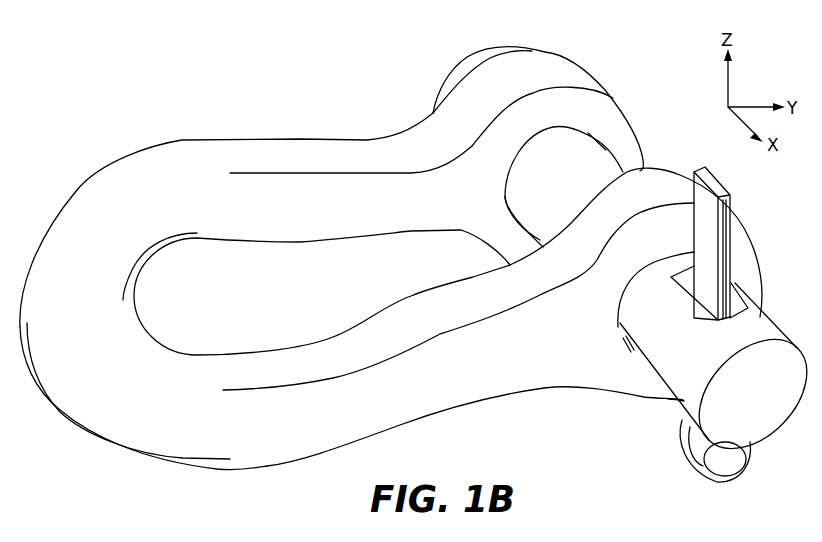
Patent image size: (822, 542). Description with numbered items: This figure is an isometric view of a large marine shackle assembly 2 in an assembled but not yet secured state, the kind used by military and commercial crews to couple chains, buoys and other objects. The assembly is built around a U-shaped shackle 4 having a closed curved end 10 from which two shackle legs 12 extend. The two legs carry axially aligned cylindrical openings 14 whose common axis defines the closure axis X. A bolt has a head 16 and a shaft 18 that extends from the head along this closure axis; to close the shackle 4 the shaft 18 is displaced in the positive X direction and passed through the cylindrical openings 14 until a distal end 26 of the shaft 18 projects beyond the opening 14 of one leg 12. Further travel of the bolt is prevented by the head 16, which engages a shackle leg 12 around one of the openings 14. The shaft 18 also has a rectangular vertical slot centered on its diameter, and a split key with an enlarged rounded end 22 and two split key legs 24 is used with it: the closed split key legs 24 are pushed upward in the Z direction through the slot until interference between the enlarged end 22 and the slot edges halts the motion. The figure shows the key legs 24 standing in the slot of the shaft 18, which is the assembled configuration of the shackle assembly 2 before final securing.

The shackle assembly 2 is at (232, 96).
The shackle 4 is at (105, 183).
The closed curved end 10 is at (67, 388).
The shackle leg 12 is at (588, 82).
The cylindrical opening 14 is at (655, 262).
The head 16 is at (445, 88).
The shaft 18 is at (745, 424).
The enlarged rounded end 22 is at (690, 442).
The split key leg 24 is at (732, 238).
The distal end 26 is at (690, 393).